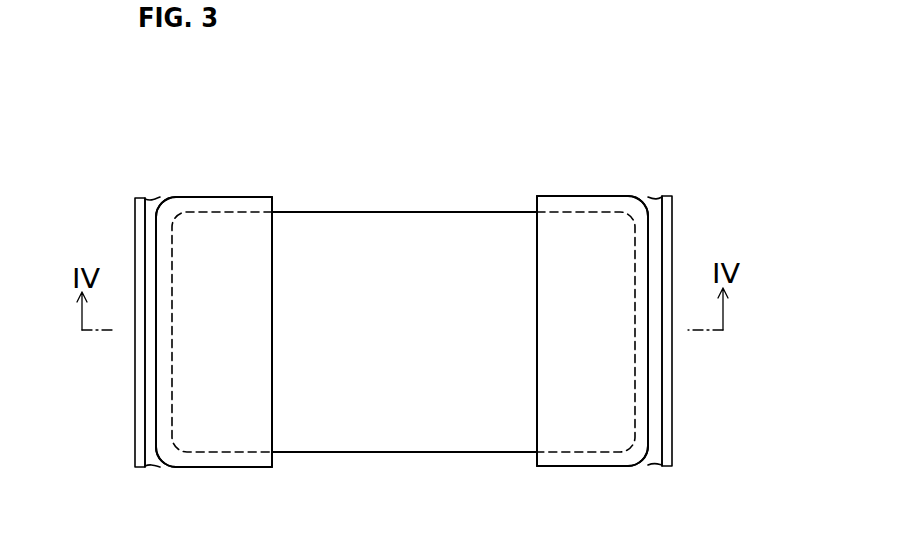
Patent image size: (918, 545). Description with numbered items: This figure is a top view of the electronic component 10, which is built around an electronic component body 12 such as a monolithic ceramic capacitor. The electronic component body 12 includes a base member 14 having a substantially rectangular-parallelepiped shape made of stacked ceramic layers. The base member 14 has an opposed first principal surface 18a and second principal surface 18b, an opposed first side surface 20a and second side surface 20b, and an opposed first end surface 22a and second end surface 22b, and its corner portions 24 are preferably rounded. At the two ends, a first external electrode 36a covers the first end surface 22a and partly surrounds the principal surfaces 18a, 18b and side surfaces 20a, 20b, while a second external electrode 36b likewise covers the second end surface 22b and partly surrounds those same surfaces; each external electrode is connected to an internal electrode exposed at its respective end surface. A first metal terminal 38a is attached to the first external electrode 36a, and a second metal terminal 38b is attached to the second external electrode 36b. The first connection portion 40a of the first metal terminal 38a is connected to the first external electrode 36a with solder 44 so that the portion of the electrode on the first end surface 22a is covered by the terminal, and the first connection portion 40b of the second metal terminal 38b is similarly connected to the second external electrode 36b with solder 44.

The electronic component 10 is at (78, 104).
The electronic component body 12 is at (299, 206).
The base member 14 is at (347, 212).
The first principal surface 18a is at (388, 273).
The second principal surface 18b is at (426, 375).
The first side surface 20a is at (383, 452).
The second side surface 20b is at (440, 212).
The first end surface 22a is at (172, 346).
The second end surface 22b is at (635, 343).
The corner portions 24 is at (181, 221).
The first external electrode 36a is at (243, 197).
The second external electrode 36b is at (568, 196).
The first metal terminal 38a is at (135, 205).
The second metal terminal 38b is at (672, 203).
The first connection portion 40a is at (139, 255).
The first connection portion 40b is at (668, 253).
The solder 44 is at (150, 382).